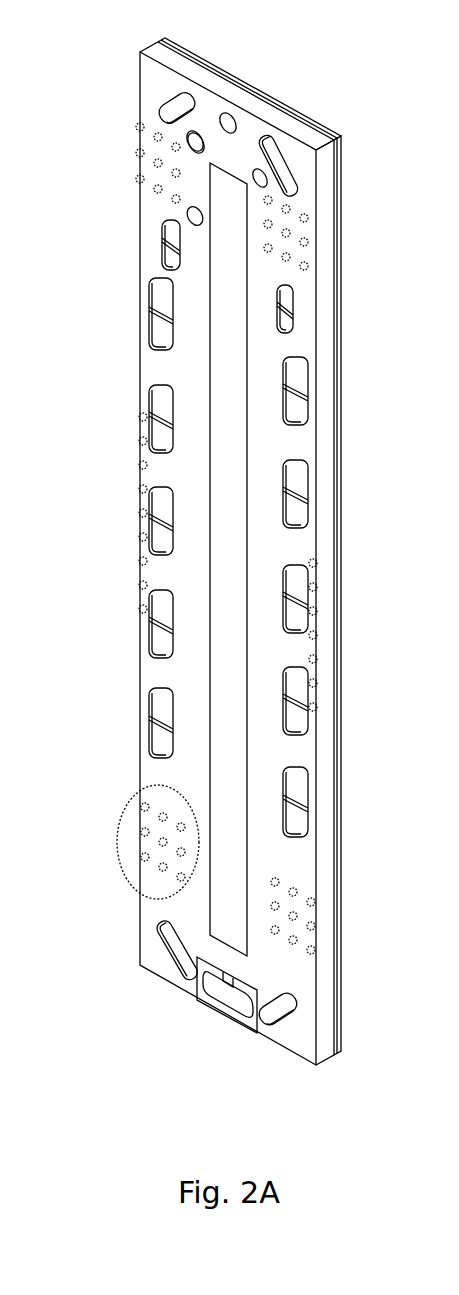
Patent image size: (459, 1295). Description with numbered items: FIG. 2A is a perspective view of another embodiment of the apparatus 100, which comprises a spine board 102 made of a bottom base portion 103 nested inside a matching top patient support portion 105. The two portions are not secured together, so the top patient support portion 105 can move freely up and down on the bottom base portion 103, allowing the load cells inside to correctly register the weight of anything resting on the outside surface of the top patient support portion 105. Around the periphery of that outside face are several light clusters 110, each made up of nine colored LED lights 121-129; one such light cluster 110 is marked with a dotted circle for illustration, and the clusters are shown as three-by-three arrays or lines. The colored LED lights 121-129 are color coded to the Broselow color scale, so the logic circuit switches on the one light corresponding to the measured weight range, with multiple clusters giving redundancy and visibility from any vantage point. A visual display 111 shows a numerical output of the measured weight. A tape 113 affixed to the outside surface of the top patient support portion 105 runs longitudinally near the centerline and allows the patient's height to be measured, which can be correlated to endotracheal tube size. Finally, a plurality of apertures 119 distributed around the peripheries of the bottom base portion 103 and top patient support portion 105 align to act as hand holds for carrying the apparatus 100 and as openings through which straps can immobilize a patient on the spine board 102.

The apparatus 100 is at (221, 539).
The spine board 102 is at (335, 182).
The bottom base portion 103 is at (342, 250).
The top patient support portion 105 is at (304, 336).
The light cluster 110 is at (110, 837).
The visual display 111 is at (227, 997).
The tape 113 is at (222, 365).
The apertures 119 is at (157, 708).
The colored LED lights 121-129 is at (127, 807).